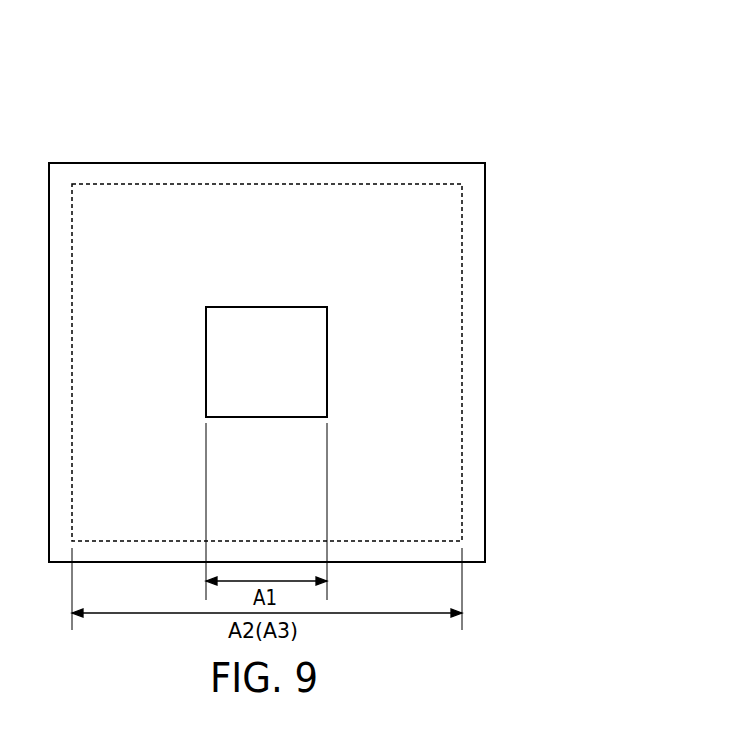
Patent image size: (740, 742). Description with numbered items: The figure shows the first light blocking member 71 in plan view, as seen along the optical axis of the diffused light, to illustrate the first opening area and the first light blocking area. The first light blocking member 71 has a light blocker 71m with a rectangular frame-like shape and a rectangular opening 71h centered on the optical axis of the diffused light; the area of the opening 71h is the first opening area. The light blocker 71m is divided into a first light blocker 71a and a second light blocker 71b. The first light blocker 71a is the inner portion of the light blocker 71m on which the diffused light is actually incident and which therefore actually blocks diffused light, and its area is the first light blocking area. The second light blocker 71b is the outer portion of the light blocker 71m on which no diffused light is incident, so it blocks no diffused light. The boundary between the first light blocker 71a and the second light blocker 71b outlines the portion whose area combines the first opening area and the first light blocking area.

The first light blocking member 71 is at (450, 148).
The first light blocker 71a is at (452, 208).
The second light blocker 71b is at (477, 238).
The light blocker 71m is at (561, 178).
The opening 71h is at (327, 325).